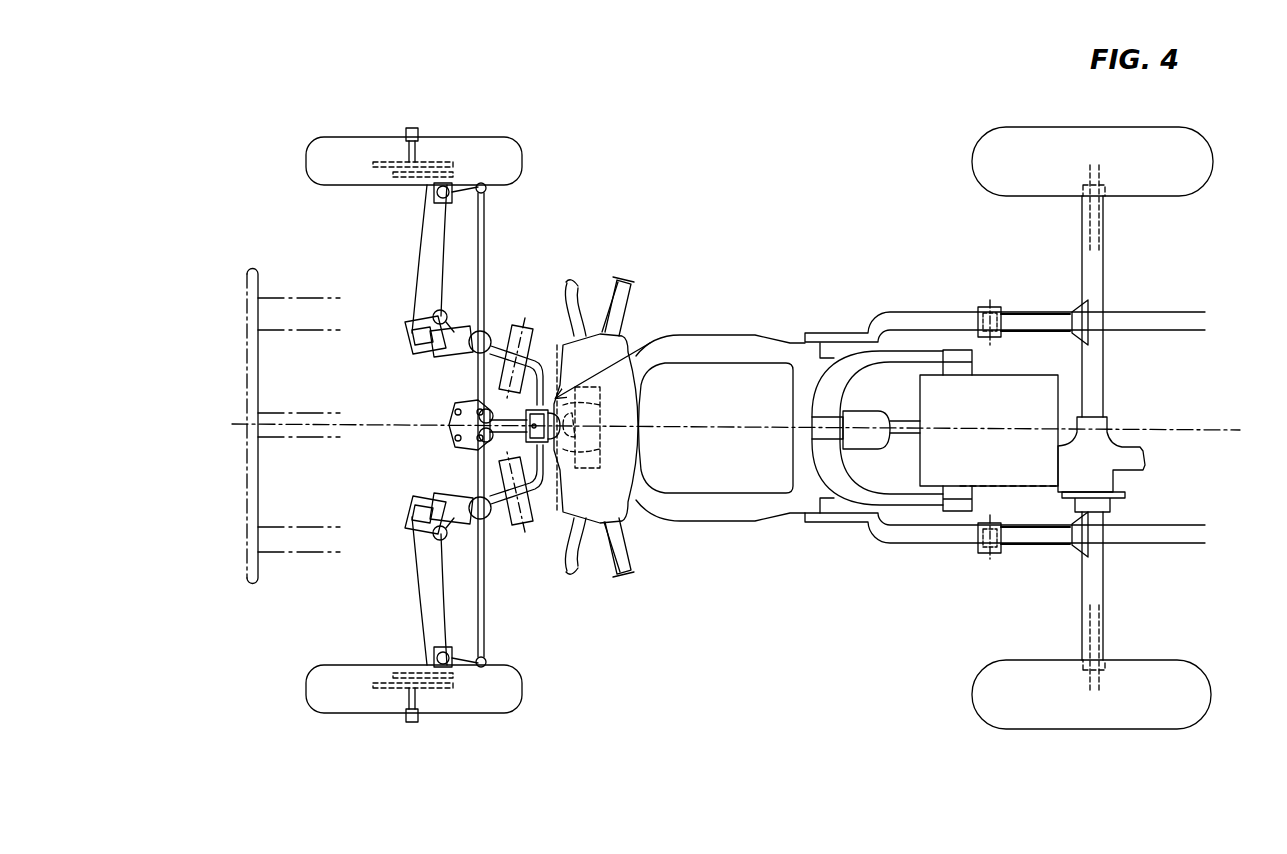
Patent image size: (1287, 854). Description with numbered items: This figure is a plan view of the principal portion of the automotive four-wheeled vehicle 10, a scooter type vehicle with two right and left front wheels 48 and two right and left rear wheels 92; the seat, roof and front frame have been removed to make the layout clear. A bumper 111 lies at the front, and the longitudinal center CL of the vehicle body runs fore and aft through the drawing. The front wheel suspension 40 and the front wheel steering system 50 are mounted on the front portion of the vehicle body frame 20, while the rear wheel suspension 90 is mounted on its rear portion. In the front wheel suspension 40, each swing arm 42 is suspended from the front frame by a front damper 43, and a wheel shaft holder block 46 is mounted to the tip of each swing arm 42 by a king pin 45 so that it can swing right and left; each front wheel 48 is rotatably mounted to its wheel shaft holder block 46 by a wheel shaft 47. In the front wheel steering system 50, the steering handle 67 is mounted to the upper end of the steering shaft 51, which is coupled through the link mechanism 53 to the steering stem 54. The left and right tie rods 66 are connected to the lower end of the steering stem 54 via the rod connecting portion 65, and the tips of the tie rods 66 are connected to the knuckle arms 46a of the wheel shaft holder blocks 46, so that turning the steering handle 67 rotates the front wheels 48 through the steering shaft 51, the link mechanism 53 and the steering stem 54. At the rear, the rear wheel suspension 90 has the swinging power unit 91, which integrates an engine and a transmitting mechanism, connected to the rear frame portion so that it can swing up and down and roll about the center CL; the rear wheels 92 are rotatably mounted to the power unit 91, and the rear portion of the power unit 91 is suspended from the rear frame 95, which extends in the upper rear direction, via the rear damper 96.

The automotive four-wheeled vehicle 10 is at (771, 126).
The vehicle body frame 20 is at (740, 524).
The front wheel suspension 40 is at (388, 568).
The swing arm 42 is at (420, 256).
The front damper 43 is at (430, 353).
The king pin 45 is at (436, 200).
The wheel shaft holder block 46 is at (438, 160).
The knuckle arm 46a is at (468, 186).
The wheel shaft 47 is at (404, 157).
The front wheel 48 is at (336, 142).
The front wheel steering system 50 is at (500, 290).
The steering shaft 51 is at (648, 437).
The link mechanism 53 is at (556, 398).
The steering stem 54 is at (458, 404).
The rod connecting portion 65 is at (450, 431).
The tie rod 66 is at (488, 218).
The steering handle 67 is at (628, 508).
The rear wheel suspension 90 is at (932, 529).
The power unit 91 is at (1030, 480).
The rear wheel 92 is at (1012, 140).
The rear frame 95 is at (918, 312).
The rear damper 96 is at (1000, 307).
The bumper 111 is at (250, 583).
The center of the vehicle body CL is at (757, 427).